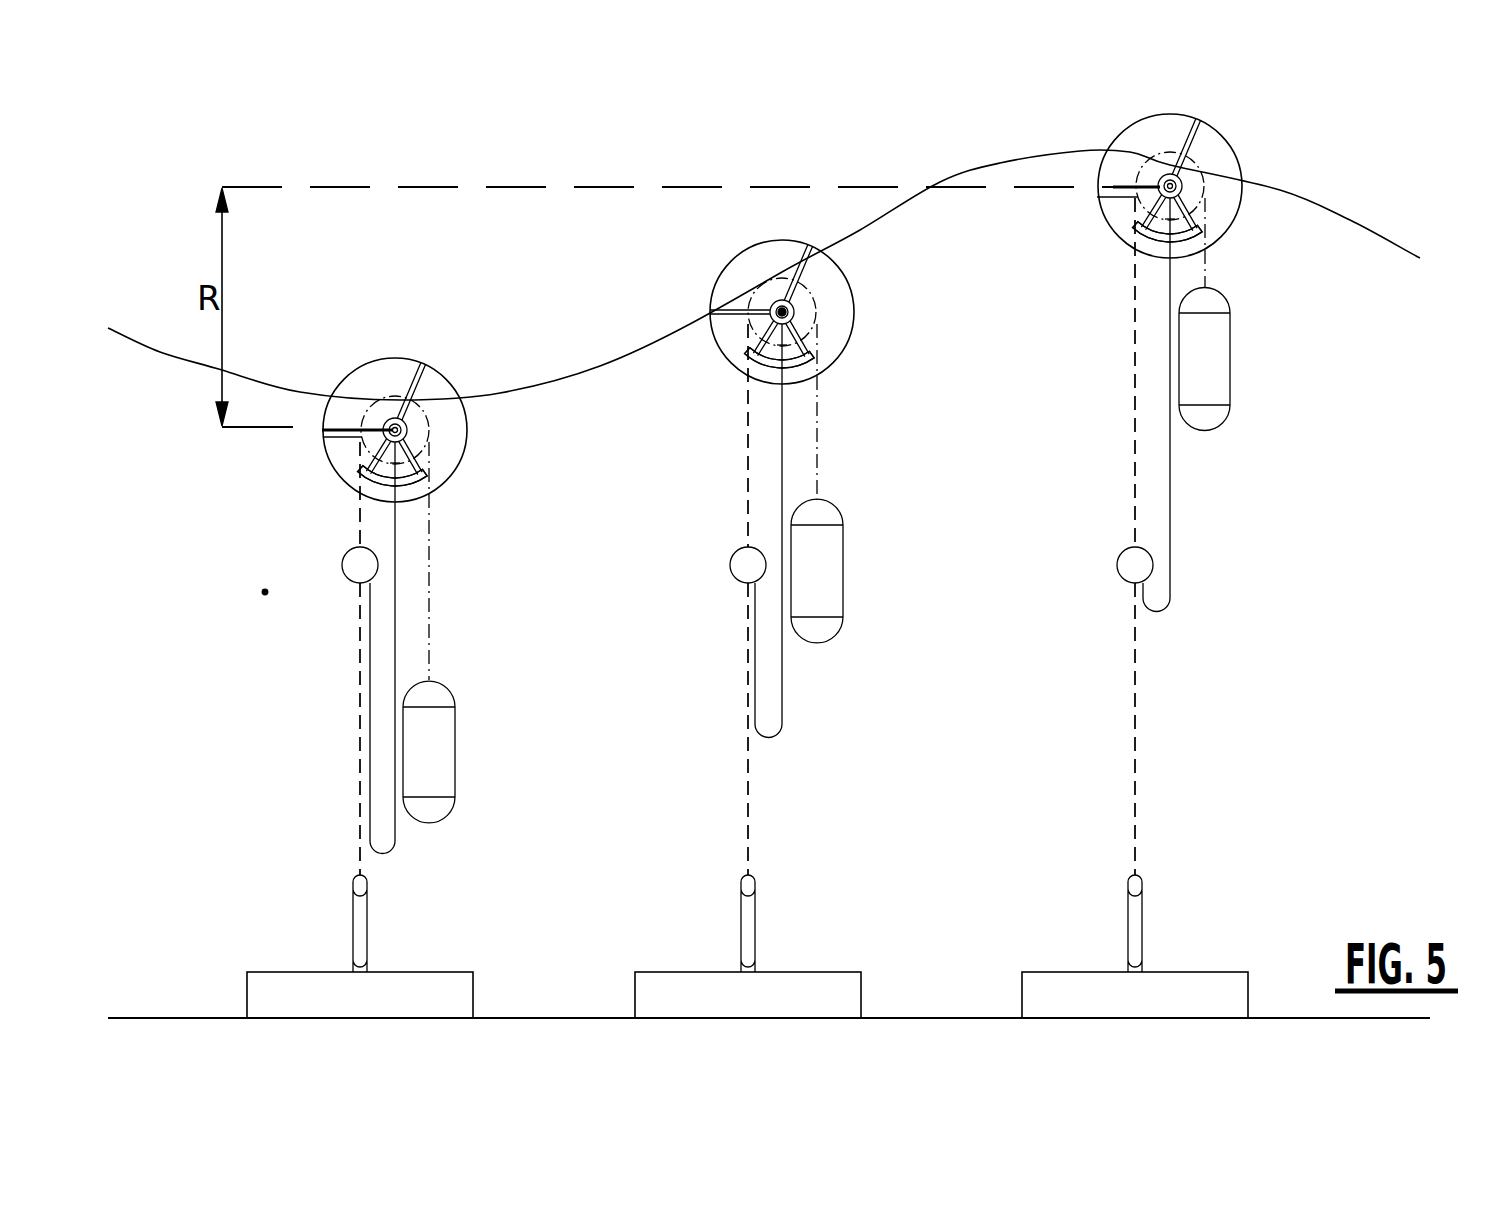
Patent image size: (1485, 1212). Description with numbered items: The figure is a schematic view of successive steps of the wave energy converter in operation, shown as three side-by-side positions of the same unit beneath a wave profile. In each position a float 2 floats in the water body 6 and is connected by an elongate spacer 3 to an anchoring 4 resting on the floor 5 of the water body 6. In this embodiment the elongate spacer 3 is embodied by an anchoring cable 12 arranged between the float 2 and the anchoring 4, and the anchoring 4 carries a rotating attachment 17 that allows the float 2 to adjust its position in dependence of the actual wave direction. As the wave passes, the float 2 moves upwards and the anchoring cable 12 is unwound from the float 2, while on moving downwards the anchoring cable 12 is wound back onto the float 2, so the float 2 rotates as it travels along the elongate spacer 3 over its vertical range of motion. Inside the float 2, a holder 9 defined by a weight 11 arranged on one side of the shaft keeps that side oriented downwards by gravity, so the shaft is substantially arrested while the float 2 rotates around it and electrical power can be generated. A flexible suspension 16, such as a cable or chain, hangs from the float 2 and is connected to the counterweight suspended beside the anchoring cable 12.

The float 2 is at (372, 360).
The elongate spacer 3 is at (358, 812).
The anchoring 4 is at (264, 979).
The floor 5 is at (155, 1018).
The water body 6 is at (265, 592).
The holder 9 is at (362, 487).
The weight 11 is at (780, 354).
The anchoring cable 12 is at (747, 536).
The flexible suspension 16 is at (429, 604).
The rotating attachment 17 is at (367, 905).